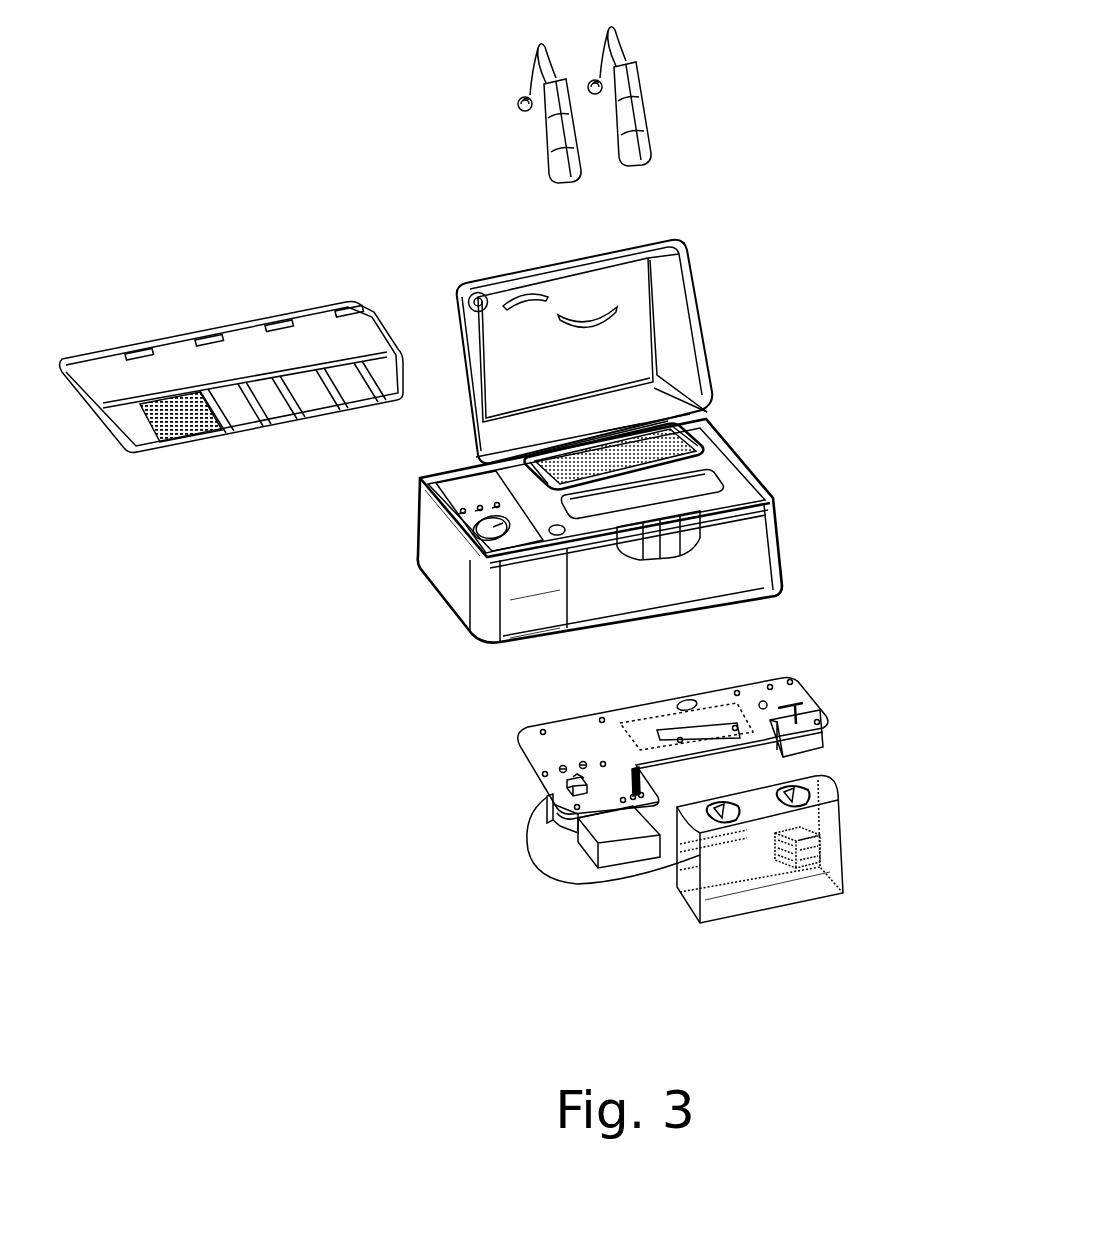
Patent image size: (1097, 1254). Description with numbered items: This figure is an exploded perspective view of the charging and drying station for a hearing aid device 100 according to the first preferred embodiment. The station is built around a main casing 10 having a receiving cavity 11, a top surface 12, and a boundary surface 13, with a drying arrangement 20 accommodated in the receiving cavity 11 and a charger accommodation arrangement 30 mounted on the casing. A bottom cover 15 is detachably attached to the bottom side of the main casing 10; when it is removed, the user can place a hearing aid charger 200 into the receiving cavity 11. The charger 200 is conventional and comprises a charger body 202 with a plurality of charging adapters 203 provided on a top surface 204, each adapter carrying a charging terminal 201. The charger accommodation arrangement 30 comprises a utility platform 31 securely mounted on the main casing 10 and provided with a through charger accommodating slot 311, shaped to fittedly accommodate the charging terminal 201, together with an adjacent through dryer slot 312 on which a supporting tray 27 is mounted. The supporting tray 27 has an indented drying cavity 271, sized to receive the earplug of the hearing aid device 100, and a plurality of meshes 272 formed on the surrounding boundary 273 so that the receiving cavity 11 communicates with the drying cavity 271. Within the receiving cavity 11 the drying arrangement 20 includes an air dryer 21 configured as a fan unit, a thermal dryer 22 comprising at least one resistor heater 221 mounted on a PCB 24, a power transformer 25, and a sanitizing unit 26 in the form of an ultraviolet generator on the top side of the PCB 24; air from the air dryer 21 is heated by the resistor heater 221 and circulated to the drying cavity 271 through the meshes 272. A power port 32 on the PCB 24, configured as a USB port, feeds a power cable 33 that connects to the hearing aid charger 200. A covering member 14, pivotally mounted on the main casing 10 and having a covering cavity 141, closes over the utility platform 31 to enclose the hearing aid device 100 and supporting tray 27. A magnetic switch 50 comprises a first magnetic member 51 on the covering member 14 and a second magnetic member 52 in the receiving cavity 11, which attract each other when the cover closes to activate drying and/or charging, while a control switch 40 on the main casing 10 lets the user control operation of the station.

The hearing aid device 100 is at (641, 64).
The main casing 10 is at (597, 467).
The receiving cavity 11 is at (572, 652).
The top surface 12 is at (526, 564).
The boundary surface 13 is at (594, 598).
The covering member 14 is at (682, 327).
The covering cavity 141 is at (505, 340).
The bottom cover 15 is at (156, 370).
The drying arrangement 20 is at (668, 753).
The air dryer 21 is at (600, 824).
The thermal dryer 22 is at (644, 667).
The resistor heater 221 is at (560, 747).
The PCB 24 is at (757, 716).
The power transformer 25 is at (800, 746).
The sanitizing unit 26 is at (795, 699).
The supporting tray 27 is at (589, 340).
The drying cavity 271 is at (684, 433).
The meshes 272 is at (542, 483).
The surrounding boundary 273 is at (634, 432).
The charger accommodation arrangement 30 is at (720, 430).
The utility platform 31 is at (730, 456).
The through charger accommodating slot 311 is at (688, 498).
The through dryer slot 312 is at (530, 469).
The power port 32 is at (547, 800).
The power cable 33 is at (563, 877).
The control switch 40 is at (494, 522).
The magnetic switch 50 is at (569, 331).
The first magnetic member 51 is at (482, 285).
The second magnetic member 52 is at (538, 550).
The hearing aid charger 200 is at (751, 842).
The charging terminal 201 is at (780, 782).
The charger body 202 is at (738, 896).
The charging adapters 203 is at (723, 827).
The top surface 204 is at (762, 796).